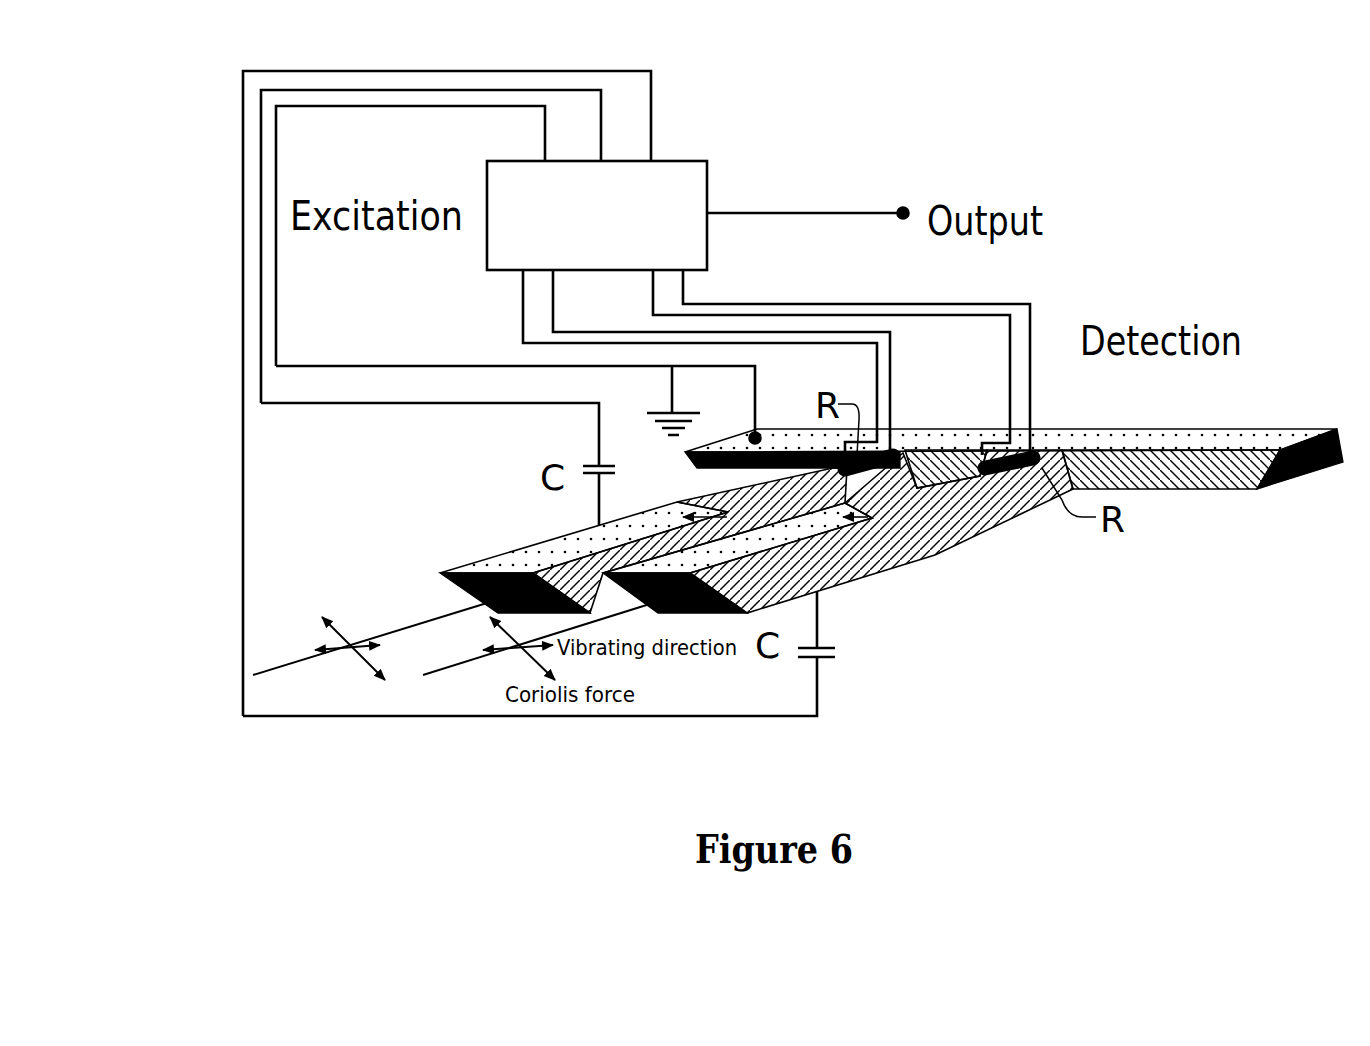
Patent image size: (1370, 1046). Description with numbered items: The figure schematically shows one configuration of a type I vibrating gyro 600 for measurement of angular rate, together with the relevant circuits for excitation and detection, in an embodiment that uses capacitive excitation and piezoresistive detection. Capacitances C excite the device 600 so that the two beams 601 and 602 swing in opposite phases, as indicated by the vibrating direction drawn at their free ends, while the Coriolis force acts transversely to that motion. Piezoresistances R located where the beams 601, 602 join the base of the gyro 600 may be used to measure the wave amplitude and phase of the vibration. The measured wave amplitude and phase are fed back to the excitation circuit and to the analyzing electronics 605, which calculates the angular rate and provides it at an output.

The type I vibrating gyro 600 is at (1210, 705).
The beam 601 is at (843, 583).
The beam 602 is at (480, 572).
The analyzing electronics 605 is at (597, 215).